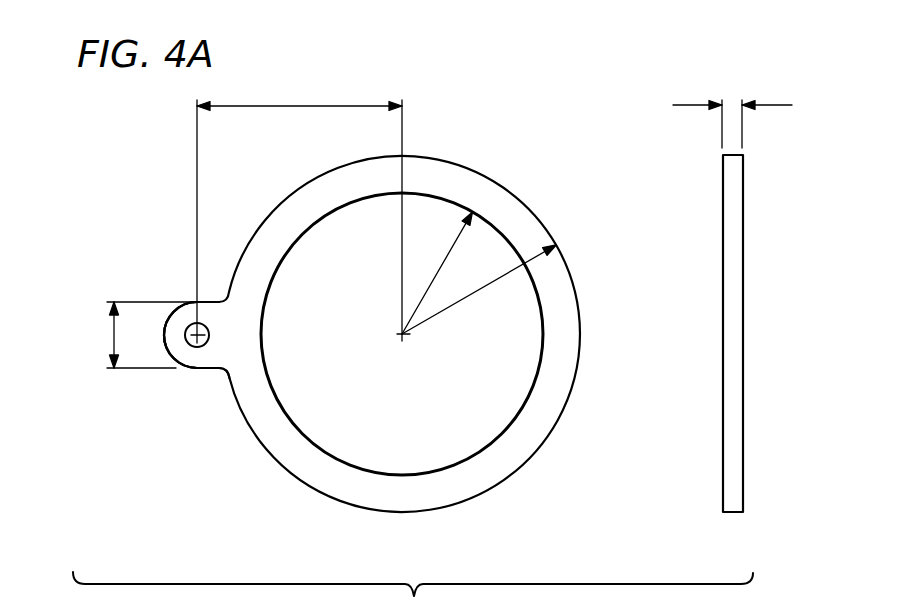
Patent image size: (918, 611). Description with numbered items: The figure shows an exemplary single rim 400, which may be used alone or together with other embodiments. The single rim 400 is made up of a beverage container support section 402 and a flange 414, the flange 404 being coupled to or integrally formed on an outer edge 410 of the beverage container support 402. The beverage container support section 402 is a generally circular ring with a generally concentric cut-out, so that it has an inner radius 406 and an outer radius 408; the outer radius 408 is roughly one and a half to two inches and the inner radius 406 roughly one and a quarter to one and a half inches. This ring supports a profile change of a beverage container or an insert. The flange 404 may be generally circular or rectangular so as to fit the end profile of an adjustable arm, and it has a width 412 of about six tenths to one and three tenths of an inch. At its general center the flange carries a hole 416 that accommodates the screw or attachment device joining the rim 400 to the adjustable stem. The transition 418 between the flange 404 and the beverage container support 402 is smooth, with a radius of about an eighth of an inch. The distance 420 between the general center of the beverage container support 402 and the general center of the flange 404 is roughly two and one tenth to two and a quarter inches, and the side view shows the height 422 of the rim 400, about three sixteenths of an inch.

The single rim 400 is at (127, 167).
The beverage container support section 402 is at (473, 507).
The flange 404 is at (187, 301).
The inner radius 406 is at (453, 237).
The outer radius 408 is at (509, 295).
The outer edge 410 is at (358, 507).
The width 412 is at (114, 335).
The flange 414 is at (183, 365).
The hole 416 is at (197, 335).
The transition 418 is at (228, 372).
The distance 420 is at (300, 106).
The height 422 is at (732, 105).